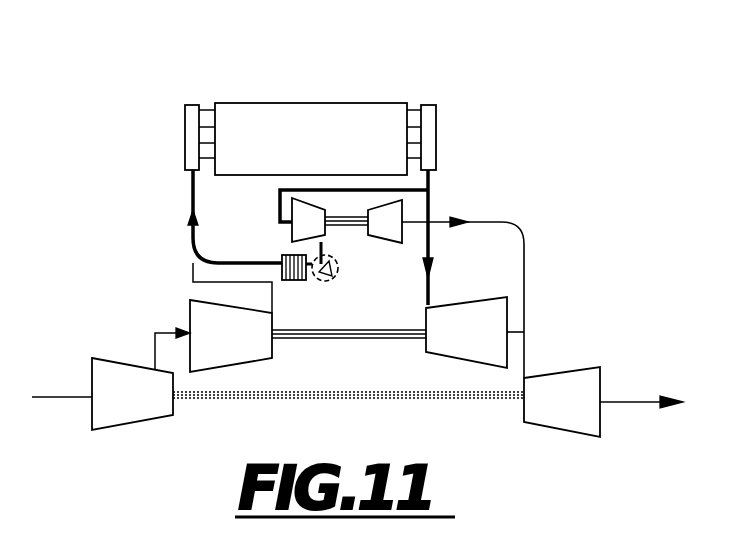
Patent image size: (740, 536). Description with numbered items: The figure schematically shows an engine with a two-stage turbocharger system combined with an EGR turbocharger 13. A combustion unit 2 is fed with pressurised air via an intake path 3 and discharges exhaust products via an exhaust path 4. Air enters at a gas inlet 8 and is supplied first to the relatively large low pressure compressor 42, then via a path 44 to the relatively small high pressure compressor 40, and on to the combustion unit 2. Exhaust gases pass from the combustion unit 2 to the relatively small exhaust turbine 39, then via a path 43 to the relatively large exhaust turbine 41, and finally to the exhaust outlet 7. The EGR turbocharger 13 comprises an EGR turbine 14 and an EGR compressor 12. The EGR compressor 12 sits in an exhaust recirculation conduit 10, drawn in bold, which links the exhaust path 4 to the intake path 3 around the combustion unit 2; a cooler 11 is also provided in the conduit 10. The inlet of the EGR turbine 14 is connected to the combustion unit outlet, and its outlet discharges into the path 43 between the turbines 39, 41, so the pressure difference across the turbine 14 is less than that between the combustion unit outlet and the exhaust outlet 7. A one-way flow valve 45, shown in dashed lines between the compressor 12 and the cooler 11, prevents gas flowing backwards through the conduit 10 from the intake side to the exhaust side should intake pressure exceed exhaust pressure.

The combustion unit 2 is at (368, 120).
The intake path 3 is at (192, 192).
The exhaust path 4 is at (432, 200).
The exhaust outlet 7 is at (632, 405).
The gas inlet 8 is at (52, 398).
The exhaust recirculation conduit 10 is at (193, 267).
The cooler 11 is at (295, 281).
The EGR compressor 12 is at (290, 232).
The EGR turbocharger 13 is at (357, 235).
The EGR turbine 14 is at (385, 245).
The exhaust turbine 39 is at (486, 297).
The compressor 40 is at (190, 312).
The exhaust turbine 41 is at (568, 432).
The compressor 42 is at (133, 428).
The path 43 is at (526, 356).
The path 44 is at (155, 347).
The one-way flow valve 45 is at (331, 334).